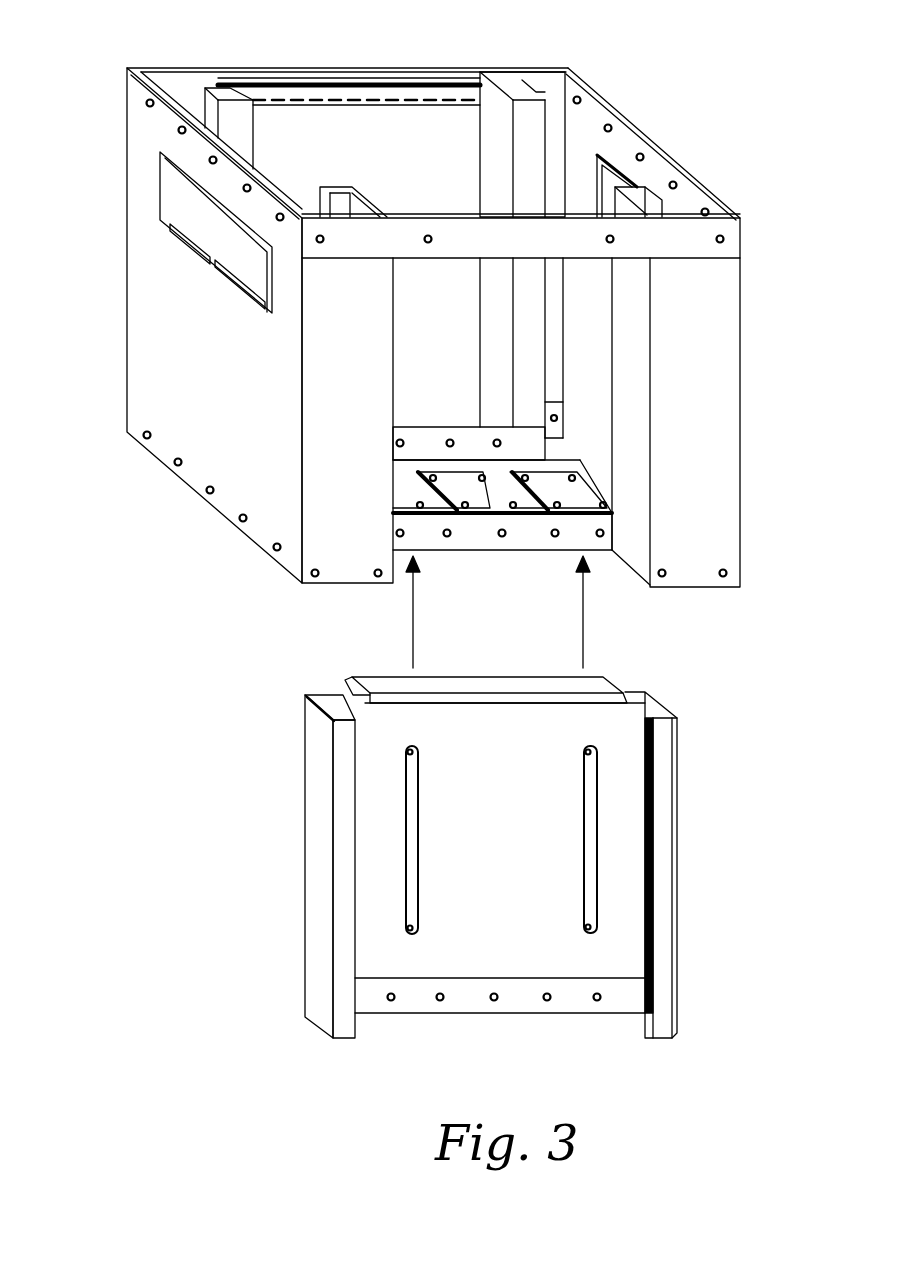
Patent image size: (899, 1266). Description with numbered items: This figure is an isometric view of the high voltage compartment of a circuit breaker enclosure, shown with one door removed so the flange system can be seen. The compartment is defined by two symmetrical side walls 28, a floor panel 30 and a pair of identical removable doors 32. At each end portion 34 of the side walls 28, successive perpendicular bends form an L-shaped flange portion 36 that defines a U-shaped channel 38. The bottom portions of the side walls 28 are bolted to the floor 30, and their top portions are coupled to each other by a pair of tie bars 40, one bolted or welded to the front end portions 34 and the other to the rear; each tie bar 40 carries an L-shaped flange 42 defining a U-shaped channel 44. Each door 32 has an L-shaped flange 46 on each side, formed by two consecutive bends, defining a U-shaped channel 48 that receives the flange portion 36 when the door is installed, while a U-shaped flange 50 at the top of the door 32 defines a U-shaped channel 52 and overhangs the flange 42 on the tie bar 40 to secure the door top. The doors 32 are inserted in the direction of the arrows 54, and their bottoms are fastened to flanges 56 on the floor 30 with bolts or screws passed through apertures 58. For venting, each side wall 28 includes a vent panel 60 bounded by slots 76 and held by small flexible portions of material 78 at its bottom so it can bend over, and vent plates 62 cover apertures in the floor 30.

The side wall 28 is at (173, 345).
The floor panel 30 is at (597, 477).
The removable door 32 is at (623, 872).
The end portion 34 is at (178, 66).
The L-shaped flange portion 36 is at (240, 120).
The U-shaped channel 38 is at (226, 80).
The tie bar 40 is at (427, 65).
The L-shaped flange 42 is at (363, 83).
The U-shaped channel 44 is at (313, 78).
The L-shaped flange 46 is at (313, 797).
The U-shaped channel 48 is at (343, 710).
The U-shaped flange 50 is at (603, 683).
The U-shaped channel 52 is at (345, 685).
The direction arrow 54 is at (515, 612).
The flange 56 is at (407, 427).
The aperture 58 is at (496, 440).
The vent panel 60 is at (163, 183).
The vent plate 62 is at (395, 487).
The slot 76 is at (171, 232).
The small portion of material 78 is at (215, 262).